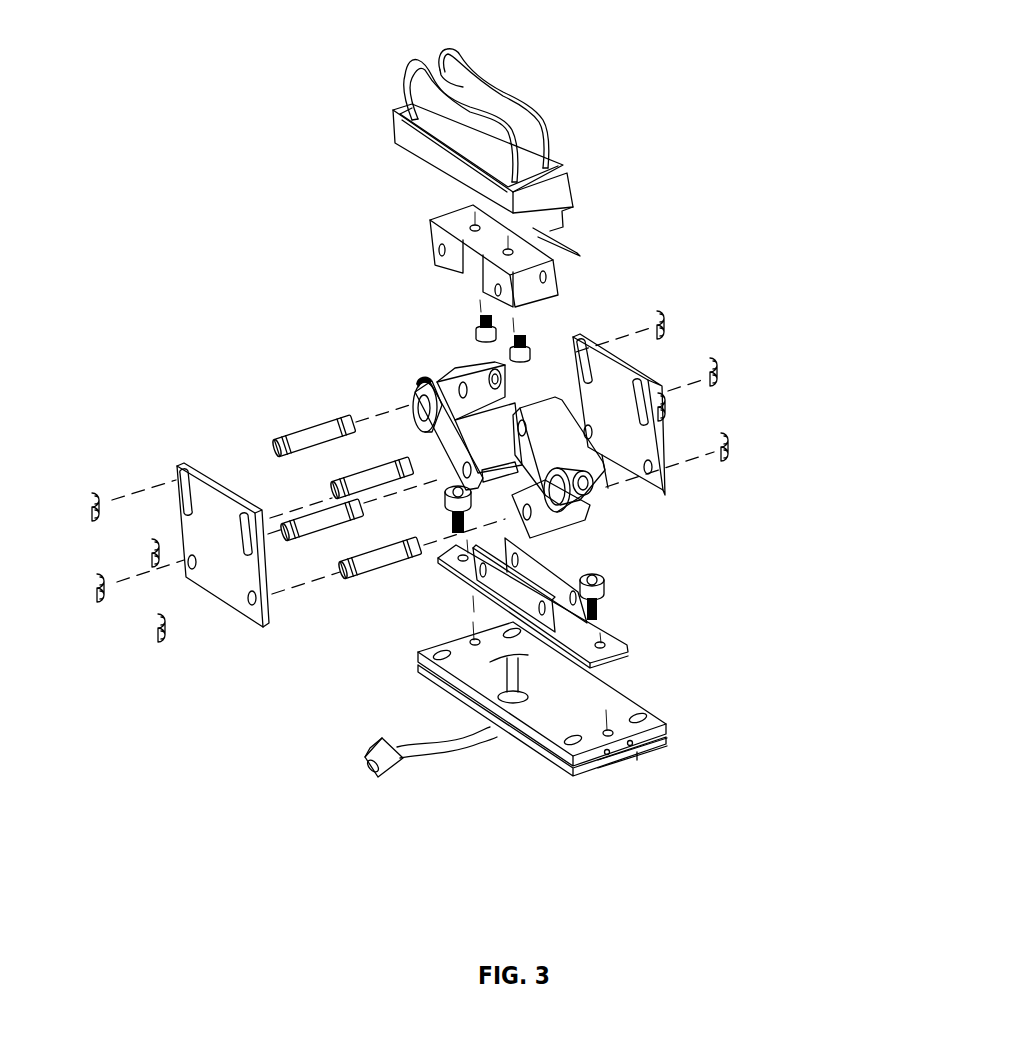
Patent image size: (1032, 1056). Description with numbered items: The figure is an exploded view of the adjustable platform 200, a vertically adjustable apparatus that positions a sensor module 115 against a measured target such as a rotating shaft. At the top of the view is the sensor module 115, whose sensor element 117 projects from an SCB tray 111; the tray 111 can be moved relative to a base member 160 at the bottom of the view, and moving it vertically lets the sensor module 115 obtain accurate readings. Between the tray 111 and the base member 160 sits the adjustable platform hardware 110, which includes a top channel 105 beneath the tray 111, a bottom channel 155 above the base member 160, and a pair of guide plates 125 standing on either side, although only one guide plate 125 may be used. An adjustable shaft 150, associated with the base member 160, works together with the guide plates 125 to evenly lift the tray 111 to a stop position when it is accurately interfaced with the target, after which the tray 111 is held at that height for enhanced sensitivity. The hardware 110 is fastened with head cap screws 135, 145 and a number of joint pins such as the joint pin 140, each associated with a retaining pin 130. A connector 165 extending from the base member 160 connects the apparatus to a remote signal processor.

The top channel 105 is at (435, 220).
The adjustable platform hardware 110 is at (750, 228).
The SCB tray 111 is at (568, 172).
The sensor module 115 is at (290, 27).
The sensor element 117 is at (422, 82).
The guide plates 125 is at (190, 467).
The retaining pin 130 is at (720, 345).
The head cap screw 135 is at (470, 320).
The joint pin 140 is at (328, 420).
The head cap screw 145 is at (603, 580).
The adjustable shaft 150 is at (421, 376).
The bottom channel 155 is at (622, 645).
The base member 160 is at (661, 707).
The connector 165 is at (380, 747).
The adjustable platform 200 is at (686, 72).